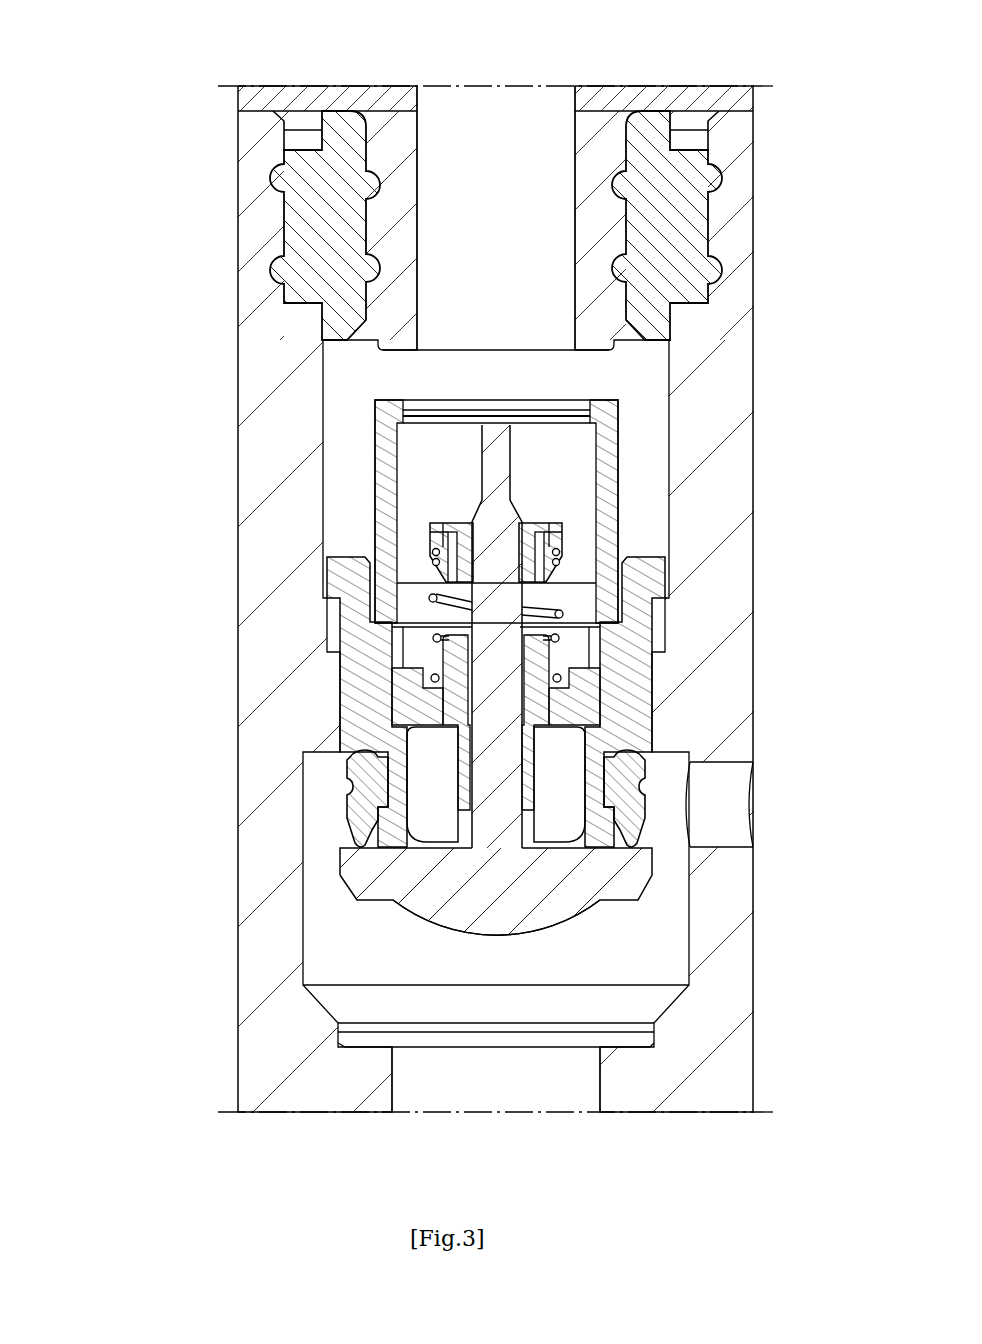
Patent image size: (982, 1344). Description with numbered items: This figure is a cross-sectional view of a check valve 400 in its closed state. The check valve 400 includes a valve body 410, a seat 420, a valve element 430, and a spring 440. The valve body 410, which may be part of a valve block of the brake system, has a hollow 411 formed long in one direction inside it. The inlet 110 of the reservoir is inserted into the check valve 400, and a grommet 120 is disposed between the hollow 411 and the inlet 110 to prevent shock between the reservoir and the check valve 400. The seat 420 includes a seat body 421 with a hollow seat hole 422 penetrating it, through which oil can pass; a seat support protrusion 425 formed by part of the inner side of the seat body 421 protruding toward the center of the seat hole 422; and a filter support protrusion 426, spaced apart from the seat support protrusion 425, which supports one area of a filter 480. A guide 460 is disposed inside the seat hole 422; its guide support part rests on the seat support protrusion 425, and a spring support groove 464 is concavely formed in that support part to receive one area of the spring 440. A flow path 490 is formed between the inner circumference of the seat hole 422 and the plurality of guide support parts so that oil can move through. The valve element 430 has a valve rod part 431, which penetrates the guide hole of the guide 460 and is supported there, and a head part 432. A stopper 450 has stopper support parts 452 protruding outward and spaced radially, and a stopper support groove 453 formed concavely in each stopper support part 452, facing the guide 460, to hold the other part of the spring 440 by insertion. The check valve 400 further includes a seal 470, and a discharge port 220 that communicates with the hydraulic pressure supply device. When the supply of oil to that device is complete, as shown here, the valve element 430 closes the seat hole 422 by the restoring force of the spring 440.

The check valve 400 is at (116, 43).
The inlet of the reservoir 110 is at (480, 140).
The grommet 120 is at (673, 213).
The valve body 410 is at (270, 350).
The hollow 411 is at (650, 434).
The filter 480 is at (378, 434).
The stopper 450 is at (428, 522).
The stopper support part 452 is at (562, 533).
The stopper support groove 453 is at (562, 568).
The spring 440 is at (430, 598).
The filter support protrusion 426 is at (625, 640).
The seat 420 is at (137, 652).
The seat body 421 is at (360, 644).
The spring support groove 464 is at (572, 680).
The flow path 490 is at (428, 703).
The guide 460 is at (592, 713).
The seat hole 422 is at (350, 763).
The seat support protrusion 425 is at (638, 788).
The seal 470 is at (432, 762).
The valve rod part 431 is at (487, 763).
The valve element 430 is at (140, 873).
The head part 432 is at (490, 917).
The discharge port 220 is at (484, 1090).